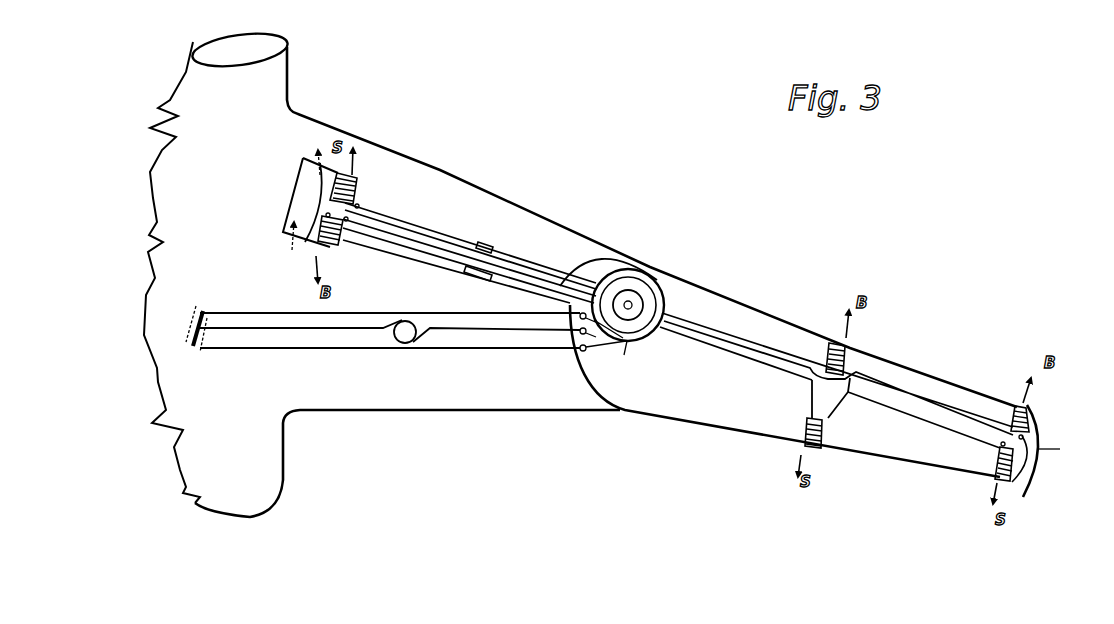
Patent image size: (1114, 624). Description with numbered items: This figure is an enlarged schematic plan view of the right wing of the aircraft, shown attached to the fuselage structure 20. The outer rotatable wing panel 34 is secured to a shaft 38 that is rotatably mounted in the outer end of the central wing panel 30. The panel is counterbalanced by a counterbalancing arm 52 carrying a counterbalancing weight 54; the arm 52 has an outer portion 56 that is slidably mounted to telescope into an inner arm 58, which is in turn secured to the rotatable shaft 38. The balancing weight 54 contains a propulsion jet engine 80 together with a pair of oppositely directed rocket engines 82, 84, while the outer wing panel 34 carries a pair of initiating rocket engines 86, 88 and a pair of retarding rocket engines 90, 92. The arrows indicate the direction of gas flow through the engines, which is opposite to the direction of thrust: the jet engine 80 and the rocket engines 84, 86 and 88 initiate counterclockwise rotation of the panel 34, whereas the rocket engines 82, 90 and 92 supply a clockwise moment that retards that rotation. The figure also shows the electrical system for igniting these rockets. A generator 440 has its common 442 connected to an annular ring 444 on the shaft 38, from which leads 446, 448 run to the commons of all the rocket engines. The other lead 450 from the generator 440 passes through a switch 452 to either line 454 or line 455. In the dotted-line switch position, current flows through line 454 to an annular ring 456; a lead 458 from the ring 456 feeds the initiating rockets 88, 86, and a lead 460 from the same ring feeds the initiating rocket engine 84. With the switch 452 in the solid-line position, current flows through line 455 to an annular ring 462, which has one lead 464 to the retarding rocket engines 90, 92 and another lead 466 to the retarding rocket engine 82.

The frame 20 is at (283, 455).
The central wing panel 30 is at (440, 175).
The outer rotatable wing panel 34 is at (717, 420).
The shaft 38 is at (722, 272).
The counterbalancing arm 52 is at (530, 251).
The counterbalancing weight 54 is at (303, 244).
The outer portion 56 is at (424, 227).
The inner arm 58 is at (552, 252).
The propulsion jet engine 80 is at (296, 202).
The rocket engine 82 is at (338, 248).
The rocket engine 84 is at (352, 178).
The initiating rocket engine 86 is at (801, 446).
The initiating rocket engine 88 is at (996, 479).
The retarding rocket engine 90 is at (846, 346).
The retarding rocket engine 92 is at (1031, 408).
The generator 440 is at (396, 341).
The common 442 is at (488, 330).
The annular ring 444 is at (632, 303).
The lead 446 is at (754, 355).
The lead 448 is at (509, 250).
The lead 450 is at (313, 331).
The switch 452 is at (203, 307).
The line 454 is at (258, 350).
The line 455 is at (340, 313).
The annular ring 456 is at (660, 278).
The lead 458 is at (800, 372).
The lead 460 is at (607, 260).
The annular ring 462 is at (643, 291).
The lead 464 is at (737, 339).
The lead 466 is at (488, 278).